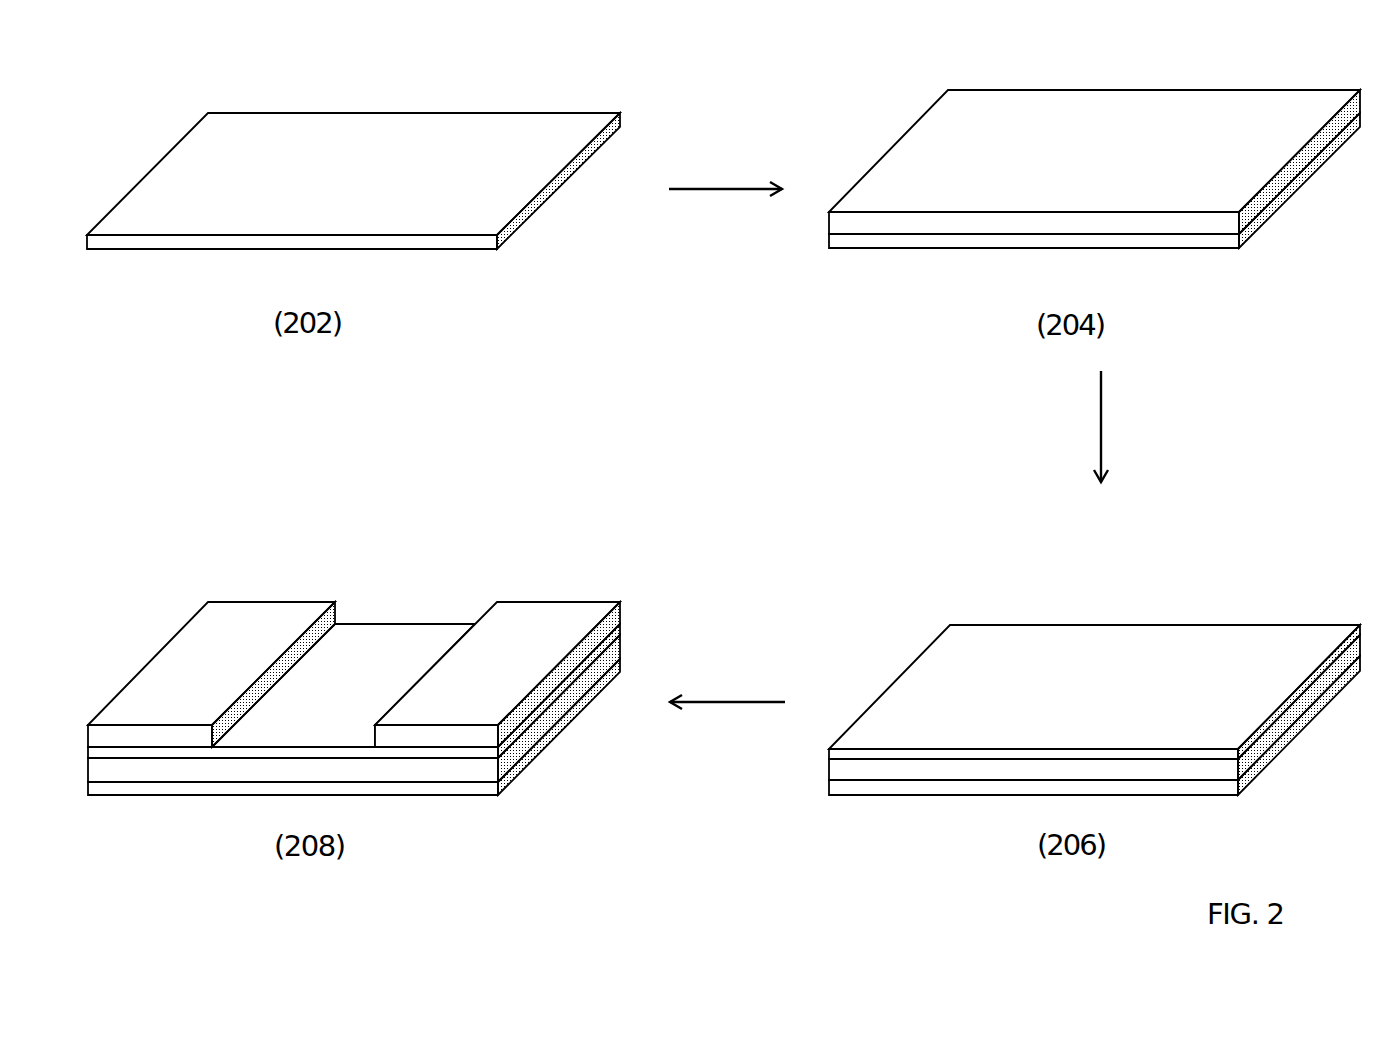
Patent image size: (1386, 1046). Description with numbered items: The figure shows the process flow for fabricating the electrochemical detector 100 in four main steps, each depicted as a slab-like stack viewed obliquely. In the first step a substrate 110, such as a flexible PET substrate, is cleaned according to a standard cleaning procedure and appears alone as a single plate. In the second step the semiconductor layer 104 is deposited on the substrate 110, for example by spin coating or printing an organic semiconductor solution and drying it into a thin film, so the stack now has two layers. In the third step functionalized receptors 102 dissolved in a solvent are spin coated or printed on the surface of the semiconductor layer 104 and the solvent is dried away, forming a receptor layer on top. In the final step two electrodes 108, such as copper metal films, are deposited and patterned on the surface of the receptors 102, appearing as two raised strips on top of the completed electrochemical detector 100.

The electrochemical detector 100 is at (168, 517).
The receptors 102 is at (1032, 690).
The semiconductor layer 104 is at (1243, 132).
The electrodes 108 is at (217, 633).
The substrate 110 is at (500, 250).